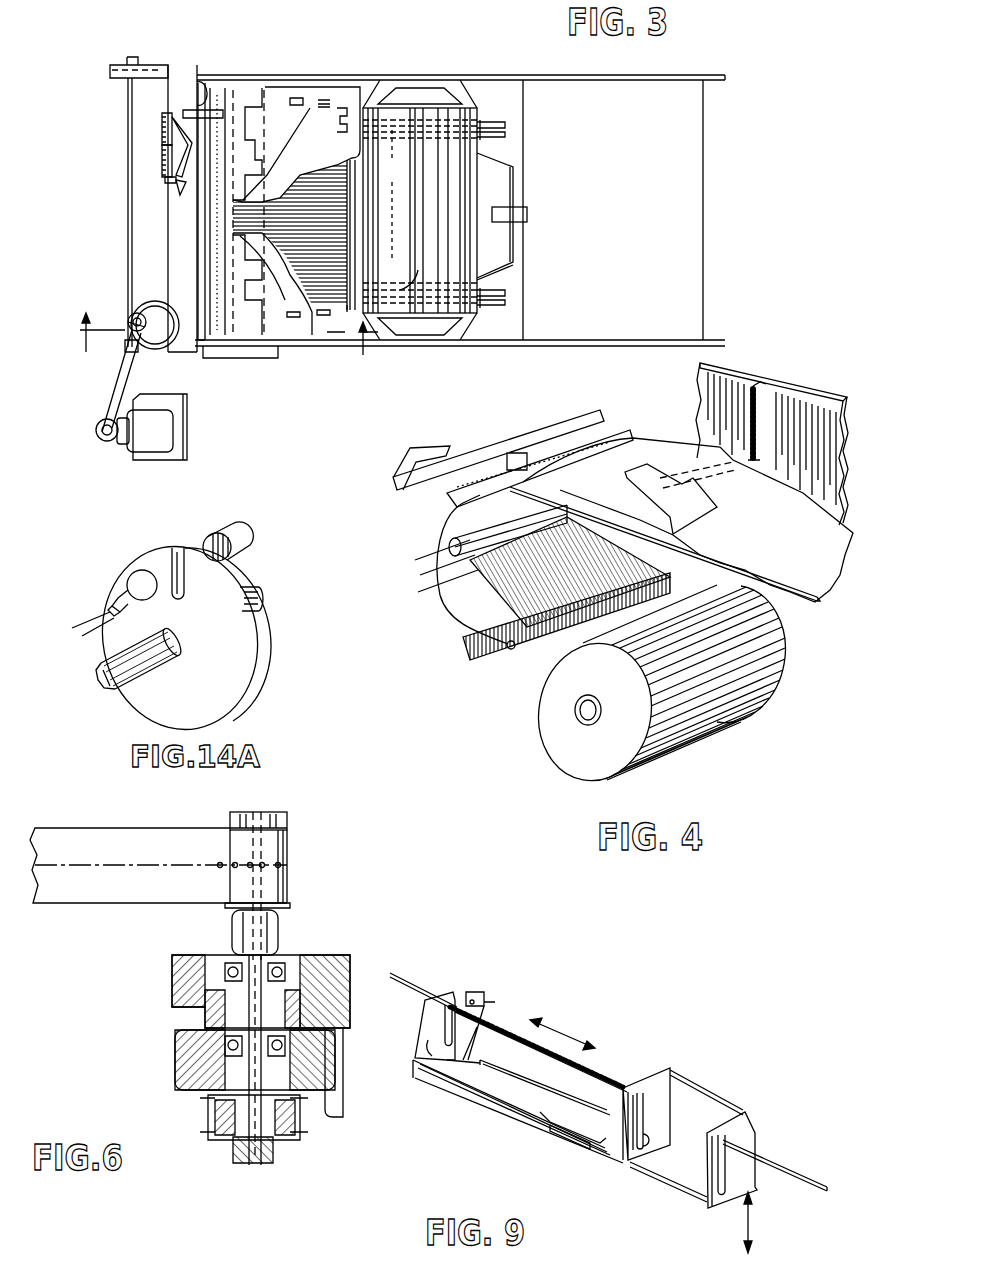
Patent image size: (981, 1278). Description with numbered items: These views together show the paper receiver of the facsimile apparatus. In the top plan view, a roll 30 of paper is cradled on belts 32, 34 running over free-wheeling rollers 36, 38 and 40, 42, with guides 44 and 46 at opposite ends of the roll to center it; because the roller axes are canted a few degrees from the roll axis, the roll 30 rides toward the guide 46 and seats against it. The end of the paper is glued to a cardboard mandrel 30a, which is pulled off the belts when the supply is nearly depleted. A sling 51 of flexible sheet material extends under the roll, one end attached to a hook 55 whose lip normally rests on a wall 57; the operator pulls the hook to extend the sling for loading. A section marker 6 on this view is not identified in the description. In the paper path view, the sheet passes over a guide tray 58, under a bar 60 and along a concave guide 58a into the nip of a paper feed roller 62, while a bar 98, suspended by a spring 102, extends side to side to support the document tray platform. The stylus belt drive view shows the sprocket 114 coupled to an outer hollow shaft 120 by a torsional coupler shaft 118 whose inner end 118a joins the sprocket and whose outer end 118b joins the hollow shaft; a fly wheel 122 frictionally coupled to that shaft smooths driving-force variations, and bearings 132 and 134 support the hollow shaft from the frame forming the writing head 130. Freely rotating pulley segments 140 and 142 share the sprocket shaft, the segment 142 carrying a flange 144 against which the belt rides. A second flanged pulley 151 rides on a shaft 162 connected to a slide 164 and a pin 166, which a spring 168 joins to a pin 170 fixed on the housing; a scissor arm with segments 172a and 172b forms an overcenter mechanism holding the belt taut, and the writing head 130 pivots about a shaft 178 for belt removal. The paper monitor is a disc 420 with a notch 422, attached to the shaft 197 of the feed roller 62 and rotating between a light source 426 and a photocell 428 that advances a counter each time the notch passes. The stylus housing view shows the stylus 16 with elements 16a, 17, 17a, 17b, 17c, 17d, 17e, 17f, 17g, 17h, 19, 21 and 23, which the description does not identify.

In FIG. 3, the second flanged pulley 151 is at (205, 72).
In FIG. 3, the shaft 162 is at (128, 80).
In FIG. 3, the pin 170 is at (168, 108).
In FIG. 3, the arm segment 172a is at (163, 128).
In FIG. 3, the arm segment 172b is at (163, 148).
In FIG. 3, the spring 168 is at (165, 164).
In FIG. 3, the slide 164 is at (170, 170).
In FIG. 3, the pin 166 is at (172, 182).
In FIG. 3, the shaft 178 is at (130, 240).
In FIG. 3, the writing head 130 is at (170, 272).
In FIG. 6, the writing head 130 is at (340, 988).
In FIG. 3, the section line 6 is at (228, 345).
In FIG. 3, the free-wheeling roller 36 is at (345, 95).
In FIG. 3, the guide 46 is at (415, 86).
In FIG. 3, the free-wheeling roller 38 is at (482, 128).
In FIG. 3, the belt 34 is at (396, 195).
In FIG. 3, the roll 30 is at (382, 228).
In FIG. 4, the roll 30 is at (596, 773).
In FIG. 3, the sling 51 is at (510, 162).
In FIG. 3, the hook 55 is at (520, 214).
In FIG. 3, the belt 32 is at (410, 288).
In FIG. 3, the wall 57 is at (518, 275).
In FIG. 3, the free-wheeling roller 42 is at (495, 305).
In FIG. 3, the free-wheeling roller 40 is at (353, 310).
In FIG. 3, the guide 44 is at (416, 340).
In FIG. 4, the spring 102 is at (745, 420).
In FIG. 4, the bar 98 is at (730, 450).
In FIG. 4, the concave guide 58a is at (440, 517).
In FIG. 4, the paper feed roller 62 is at (450, 556).
In FIG. 4, the bar 60 is at (460, 577).
In FIG. 4, the guide tray 58 is at (470, 620).
In FIG. 4, the cardboard mandrel 30a is at (575, 710).
In FIG. 14A, the notch 422 is at (177, 546).
In FIG. 14A, the light source 426 is at (138, 575).
In FIG. 14A, the photocell 428 is at (246, 536).
In FIG. 14A, the disc 420 is at (258, 684).
In FIG. 14A, the shaft 197 is at (125, 688).
In FIG. 6, the pulley segment 140 is at (285, 812).
In FIG. 6, the sprocket 114 is at (288, 860).
In FIG. 6, the pulley segment 142 is at (288, 886).
In FIG. 6, the inner end 118a is at (285, 896).
In FIG. 6, the flange 144 is at (282, 915).
In FIG. 6, the bearing 132 is at (232, 965).
In FIG. 6, the torsional coupler shaft 118 is at (307, 985).
In FIG. 6, the fly wheel 122 is at (185, 1045).
In FIG. 6, the bearing 134 is at (272, 1048).
In FIG. 6, the outer hollow shaft 120 is at (290, 1130).
In FIG. 6, the outer end 118b is at (255, 1165).
In FIG. 9, the rod 16a is at (412, 985).
In FIG. 9, the slot 17h is at (448, 1008).
In FIG. 9, the bracket 17g is at (478, 1000).
In FIG. 9, the chain 19 is at (505, 1024).
In FIG. 9, the direction arrow 21 is at (568, 1027).
In FIG. 9, the back wall 17f is at (578, 1105).
In FIG. 9, the end plate 17d is at (675, 1068).
In FIG. 9, the stylus 16 is at (692, 1115).
In FIG. 9, the end plate 17b is at (430, 1055).
In FIG. 9, the front wall 17e is at (465, 1085).
In FIG. 9, the bottom 17a is at (665, 1165).
In FIG. 9, the tray 17 is at (691, 1197).
In FIG. 9, the end plate 17c is at (742, 1173).
In FIG. 9, the direction arrow 23 is at (752, 1225).